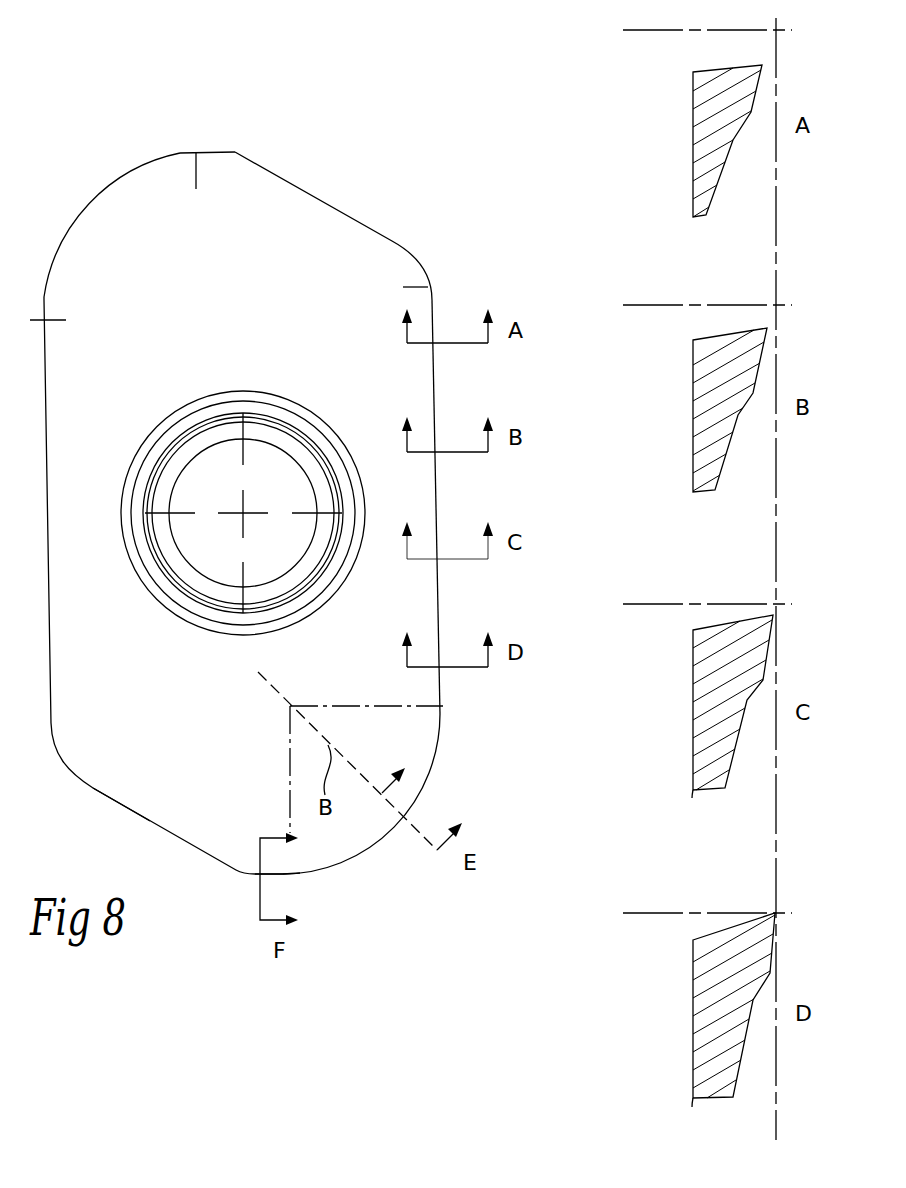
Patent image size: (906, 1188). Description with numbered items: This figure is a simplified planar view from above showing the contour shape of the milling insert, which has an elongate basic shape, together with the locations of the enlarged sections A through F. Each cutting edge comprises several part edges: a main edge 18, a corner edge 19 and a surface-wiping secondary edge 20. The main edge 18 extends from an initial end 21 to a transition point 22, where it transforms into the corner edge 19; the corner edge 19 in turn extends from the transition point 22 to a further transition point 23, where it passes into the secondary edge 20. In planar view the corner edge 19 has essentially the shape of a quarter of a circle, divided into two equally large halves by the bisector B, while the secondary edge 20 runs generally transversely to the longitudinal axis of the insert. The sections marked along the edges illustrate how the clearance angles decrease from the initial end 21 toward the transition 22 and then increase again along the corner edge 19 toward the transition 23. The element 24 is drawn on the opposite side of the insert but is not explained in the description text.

The main cutting edge 18 is at (440, 500).
The corner cutting edge 19 is at (420, 800).
The end cutting edge 20 is at (273, 875).
The transition corner 21 is at (437, 297).
The corner radius center line 22 is at (442, 703).
The secondary end edge 23 is at (292, 876).
The inclined side edge 24 is at (148, 818).